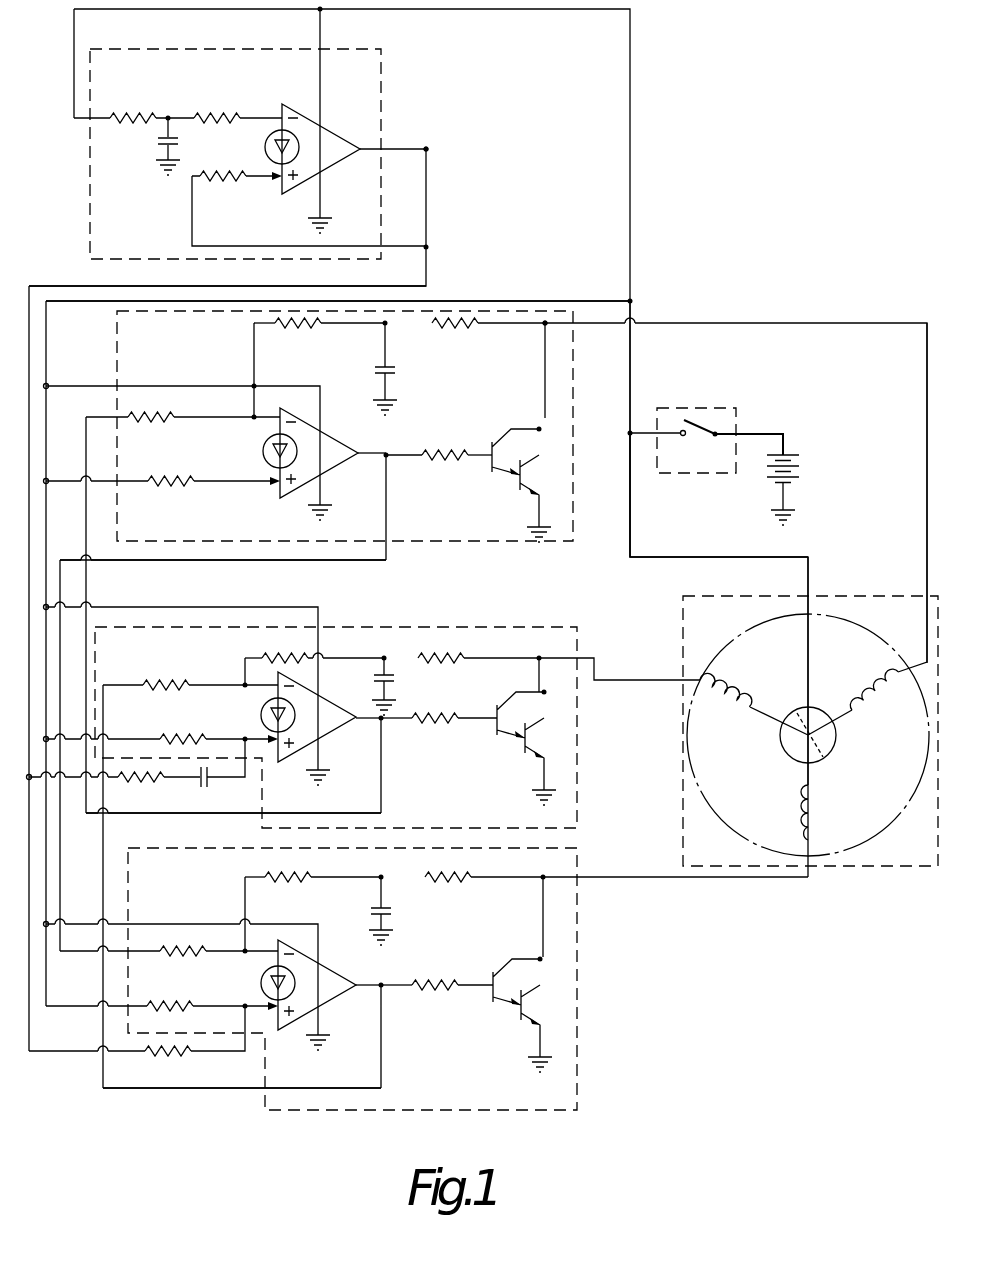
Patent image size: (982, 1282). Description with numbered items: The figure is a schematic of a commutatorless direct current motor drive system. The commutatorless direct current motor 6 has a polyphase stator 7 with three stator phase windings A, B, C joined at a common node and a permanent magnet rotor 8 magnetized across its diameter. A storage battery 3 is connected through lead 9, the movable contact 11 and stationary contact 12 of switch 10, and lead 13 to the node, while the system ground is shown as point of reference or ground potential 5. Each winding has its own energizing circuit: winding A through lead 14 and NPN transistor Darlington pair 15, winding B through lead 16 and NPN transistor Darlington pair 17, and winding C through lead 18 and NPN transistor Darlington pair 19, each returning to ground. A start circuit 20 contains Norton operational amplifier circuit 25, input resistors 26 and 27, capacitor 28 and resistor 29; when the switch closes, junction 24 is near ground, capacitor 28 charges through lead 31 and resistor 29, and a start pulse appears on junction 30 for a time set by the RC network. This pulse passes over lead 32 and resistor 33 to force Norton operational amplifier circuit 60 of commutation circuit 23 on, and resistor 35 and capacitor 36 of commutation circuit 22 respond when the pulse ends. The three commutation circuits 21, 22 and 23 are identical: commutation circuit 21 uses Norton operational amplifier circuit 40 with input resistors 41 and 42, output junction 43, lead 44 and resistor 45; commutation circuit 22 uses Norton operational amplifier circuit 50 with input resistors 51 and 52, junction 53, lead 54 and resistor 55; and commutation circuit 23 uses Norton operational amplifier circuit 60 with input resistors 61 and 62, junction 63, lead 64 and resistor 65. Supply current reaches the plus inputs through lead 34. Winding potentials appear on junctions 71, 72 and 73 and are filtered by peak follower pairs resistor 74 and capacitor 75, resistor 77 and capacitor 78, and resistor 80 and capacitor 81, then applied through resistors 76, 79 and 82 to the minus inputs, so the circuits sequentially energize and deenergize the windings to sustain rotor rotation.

The storage battery 3 is at (801, 478).
The point of reference or ground potential 5 is at (165, 168).
The commutatorless direct current motor 6 is at (878, 870).
The polyphase stator 7 is at (919, 803).
The permanent magnet rotor 8 is at (785, 753).
The lead 9 is at (772, 433).
The electrical switch 10 is at (740, 418).
The movable contact 11 is at (706, 425).
The stationary contact 12 is at (683, 428).
The lead 13 is at (634, 500).
The lead 14 is at (925, 624).
The NPN transistor Darlington pair 15 is at (526, 433).
The lead 16 is at (596, 660).
The NPN transistor Darlington pair 17 is at (526, 710).
The lead 18 is at (755, 880).
The NPN transistor Darlington pair 19 is at (524, 974).
The start circuit 20 is at (391, 110).
The commutation circuit 21 is at (467, 546).
The commutation circuit 22 is at (586, 748).
The commutation circuit 23 is at (584, 1030).
The junction 24 is at (162, 123).
The Norton operational amplifier circuit 25 is at (333, 137).
The input resistor 26 is at (210, 183).
The input resistor 27 is at (213, 113).
The capacitor 28 is at (180, 142).
The resistor 29 is at (124, 113).
The junction 30 is at (430, 151).
The lead 31 is at (633, 366).
The lead 32 is at (430, 284).
The resistor 33 is at (164, 1060).
The lead 34 is at (569, 300).
The resistor 35 is at (140, 785).
The capacitor 36 is at (210, 790).
The Norton operational amplifier circuit 40 is at (334, 470).
The input resistor 41 is at (170, 478).
The input resistor 42 is at (170, 418).
The junction 43 is at (390, 470).
The lead 44 is at (392, 561).
The resistor 45 is at (434, 463).
The Norton operational amplifier circuit 50 is at (336, 724).
The input resistor 51 is at (176, 736).
The input resistor 52 is at (186, 682).
The junction 53 is at (388, 722).
The lead 54 is at (385, 801).
The resistor 55 is at (424, 715).
The Norton operational amplifier circuit 60 is at (336, 991).
The input resistor 61 is at (174, 1003).
The input resistor 62 is at (193, 958).
The junction 63 is at (388, 990).
The lead 64 is at (385, 1087).
The resistor 65 is at (436, 982).
The junction 71 is at (543, 328).
The junction 72 is at (536, 661).
The junction 73 is at (541, 881).
The resistor 74 is at (455, 328).
The capacitor 75 is at (396, 369).
The resistor 76 is at (296, 327).
The resistor 77 is at (422, 654).
The capacitor 78 is at (374, 676).
The input resistor 79 is at (272, 656).
The resistor 80 is at (432, 882).
The capacitor 81 is at (370, 913).
The resistor 82 is at (290, 880).
The stator phase winding A is at (868, 712).
The stator phase winding B is at (738, 718).
The stator phase winding C is at (814, 811).